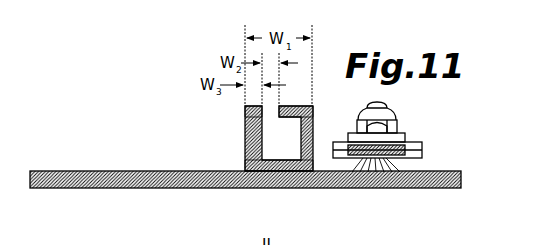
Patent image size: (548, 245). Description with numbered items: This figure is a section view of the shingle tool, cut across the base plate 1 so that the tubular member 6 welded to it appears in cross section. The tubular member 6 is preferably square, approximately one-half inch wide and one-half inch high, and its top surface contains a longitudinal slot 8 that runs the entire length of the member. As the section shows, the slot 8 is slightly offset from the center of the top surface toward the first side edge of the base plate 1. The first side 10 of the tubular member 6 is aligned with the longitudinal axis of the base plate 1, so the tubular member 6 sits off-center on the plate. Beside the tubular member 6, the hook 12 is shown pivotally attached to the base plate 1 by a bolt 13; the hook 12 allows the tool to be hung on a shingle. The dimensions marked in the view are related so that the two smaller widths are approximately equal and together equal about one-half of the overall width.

The base plate 1 is at (128, 189).
The tubular member 6 is at (243, 134).
The slot 8 is at (246, 108).
The first side 10 is at (246, 153).
The hook 12 is at (422, 152).
The bolt 13 is at (398, 123).